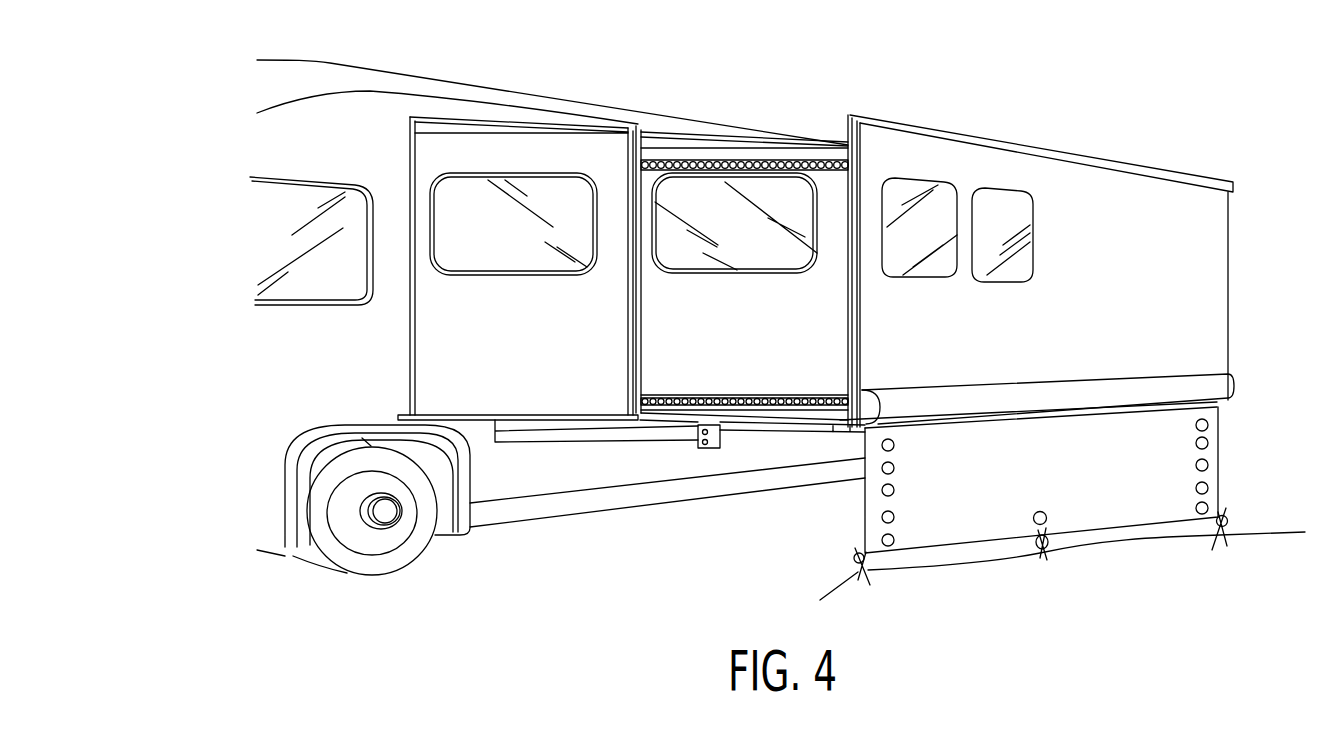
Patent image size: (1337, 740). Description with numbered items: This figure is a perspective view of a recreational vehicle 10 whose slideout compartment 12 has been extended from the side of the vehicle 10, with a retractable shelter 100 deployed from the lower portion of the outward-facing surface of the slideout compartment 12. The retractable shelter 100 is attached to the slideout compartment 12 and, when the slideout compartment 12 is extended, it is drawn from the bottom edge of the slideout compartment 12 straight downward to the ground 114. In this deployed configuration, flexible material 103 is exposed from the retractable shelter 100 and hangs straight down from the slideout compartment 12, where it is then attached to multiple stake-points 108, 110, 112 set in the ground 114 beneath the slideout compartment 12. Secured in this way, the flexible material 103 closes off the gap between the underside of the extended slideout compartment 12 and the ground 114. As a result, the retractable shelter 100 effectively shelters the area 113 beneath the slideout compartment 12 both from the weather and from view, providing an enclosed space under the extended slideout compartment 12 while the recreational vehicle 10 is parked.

The recreational vehicle 10 is at (438, 88).
The slideout compartment 12 is at (1088, 318).
The retractable shelter 100 is at (853, 396).
The flexible material 103 is at (1080, 463).
The stake-point 108 is at (878, 570).
The stake-point 110 is at (1040, 558).
The stake-point 112 is at (1227, 537).
The area 113 is at (837, 517).
The ground 114 is at (1273, 532).